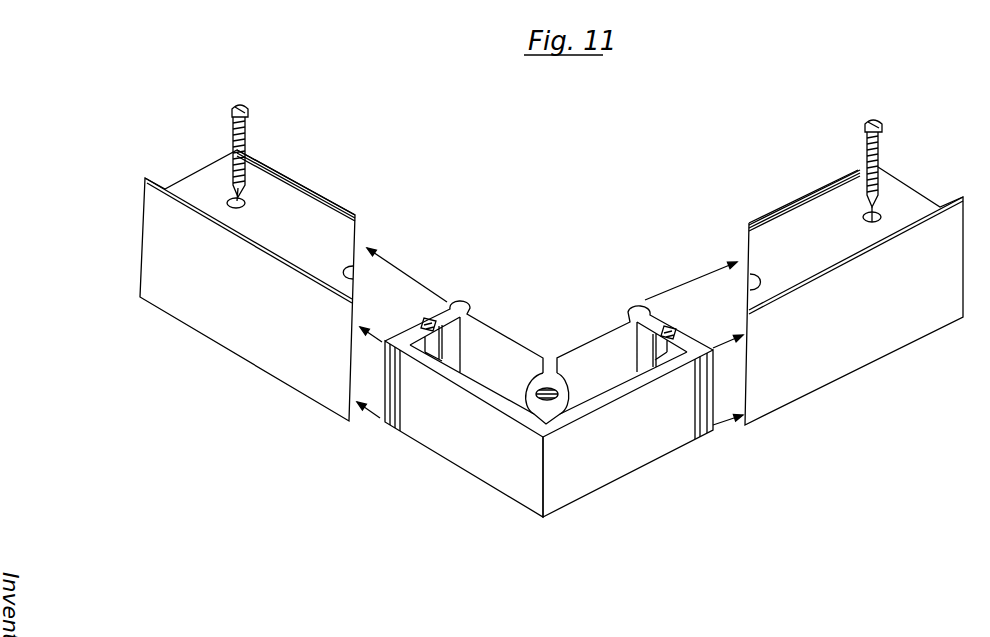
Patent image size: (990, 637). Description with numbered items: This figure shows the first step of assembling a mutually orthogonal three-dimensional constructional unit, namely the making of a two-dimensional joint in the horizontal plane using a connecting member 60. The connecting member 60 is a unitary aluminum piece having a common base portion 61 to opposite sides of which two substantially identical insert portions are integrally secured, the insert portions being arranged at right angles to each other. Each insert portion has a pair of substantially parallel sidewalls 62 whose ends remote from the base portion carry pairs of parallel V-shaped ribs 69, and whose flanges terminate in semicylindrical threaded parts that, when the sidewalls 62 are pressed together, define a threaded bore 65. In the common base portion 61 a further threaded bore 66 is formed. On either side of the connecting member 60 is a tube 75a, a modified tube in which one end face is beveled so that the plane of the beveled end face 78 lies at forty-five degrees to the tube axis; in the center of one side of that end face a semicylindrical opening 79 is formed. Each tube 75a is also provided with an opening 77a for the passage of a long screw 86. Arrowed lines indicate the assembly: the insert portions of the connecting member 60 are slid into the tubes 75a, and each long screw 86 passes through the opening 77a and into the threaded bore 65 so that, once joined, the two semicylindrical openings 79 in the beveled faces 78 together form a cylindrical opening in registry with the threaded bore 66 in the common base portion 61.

The connecting member 60 is at (552, 404).
The common base portion 61 is at (543, 370).
The sidewalls 62 is at (457, 453).
The threaded bore 65 is at (427, 321).
The threaded bore 66 is at (559, 391).
The ribs 69 is at (399, 424).
The tube 75a is at (333, 194).
The opening 77a is at (245, 206).
The beveled end face 78 is at (357, 238).
The semicylindrical opening 79 is at (350, 272).
The long screw 86 is at (233, 134).